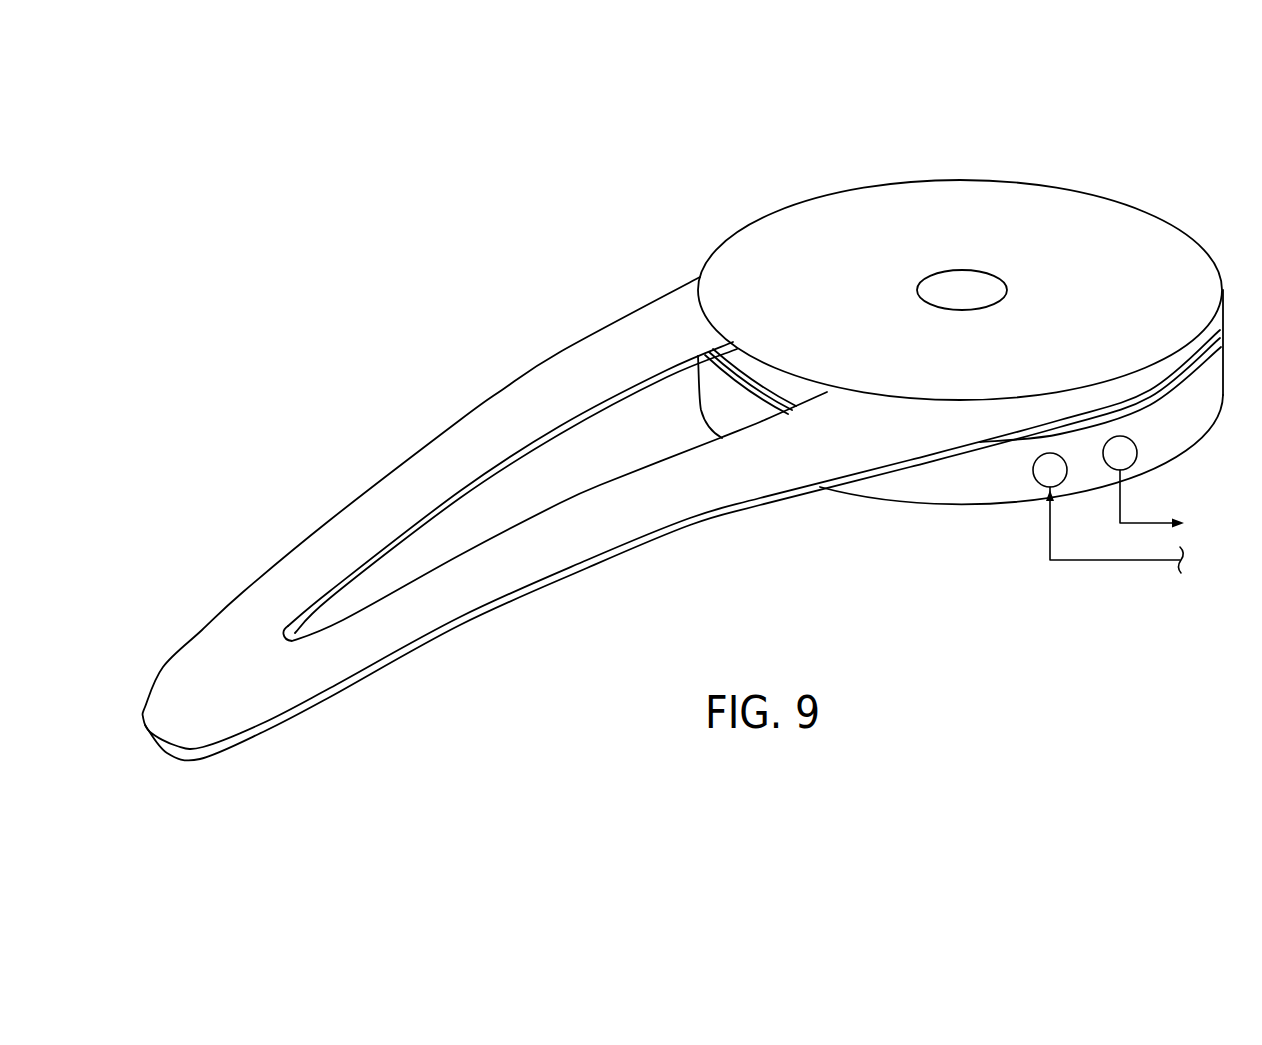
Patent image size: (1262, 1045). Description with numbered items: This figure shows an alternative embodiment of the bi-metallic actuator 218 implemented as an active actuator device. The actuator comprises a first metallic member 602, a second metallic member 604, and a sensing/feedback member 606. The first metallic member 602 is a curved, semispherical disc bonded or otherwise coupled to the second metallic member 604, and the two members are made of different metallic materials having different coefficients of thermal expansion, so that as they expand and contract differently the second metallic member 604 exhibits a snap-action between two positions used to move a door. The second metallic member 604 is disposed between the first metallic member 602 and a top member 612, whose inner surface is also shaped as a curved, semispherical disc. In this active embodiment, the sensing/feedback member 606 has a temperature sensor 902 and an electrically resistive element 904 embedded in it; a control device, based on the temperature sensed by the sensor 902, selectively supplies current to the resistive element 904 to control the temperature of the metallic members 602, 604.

The bi-metallic actuator 218 is at (1012, 147).
The first metallic member 602 is at (750, 372).
The second metallic member 604 is at (640, 333).
The sensing/feedback member 606 is at (917, 497).
The top member 612 is at (1155, 226).
The temperature sensor 902 is at (1137, 453).
The electrically resistive element 904 is at (1033, 470).